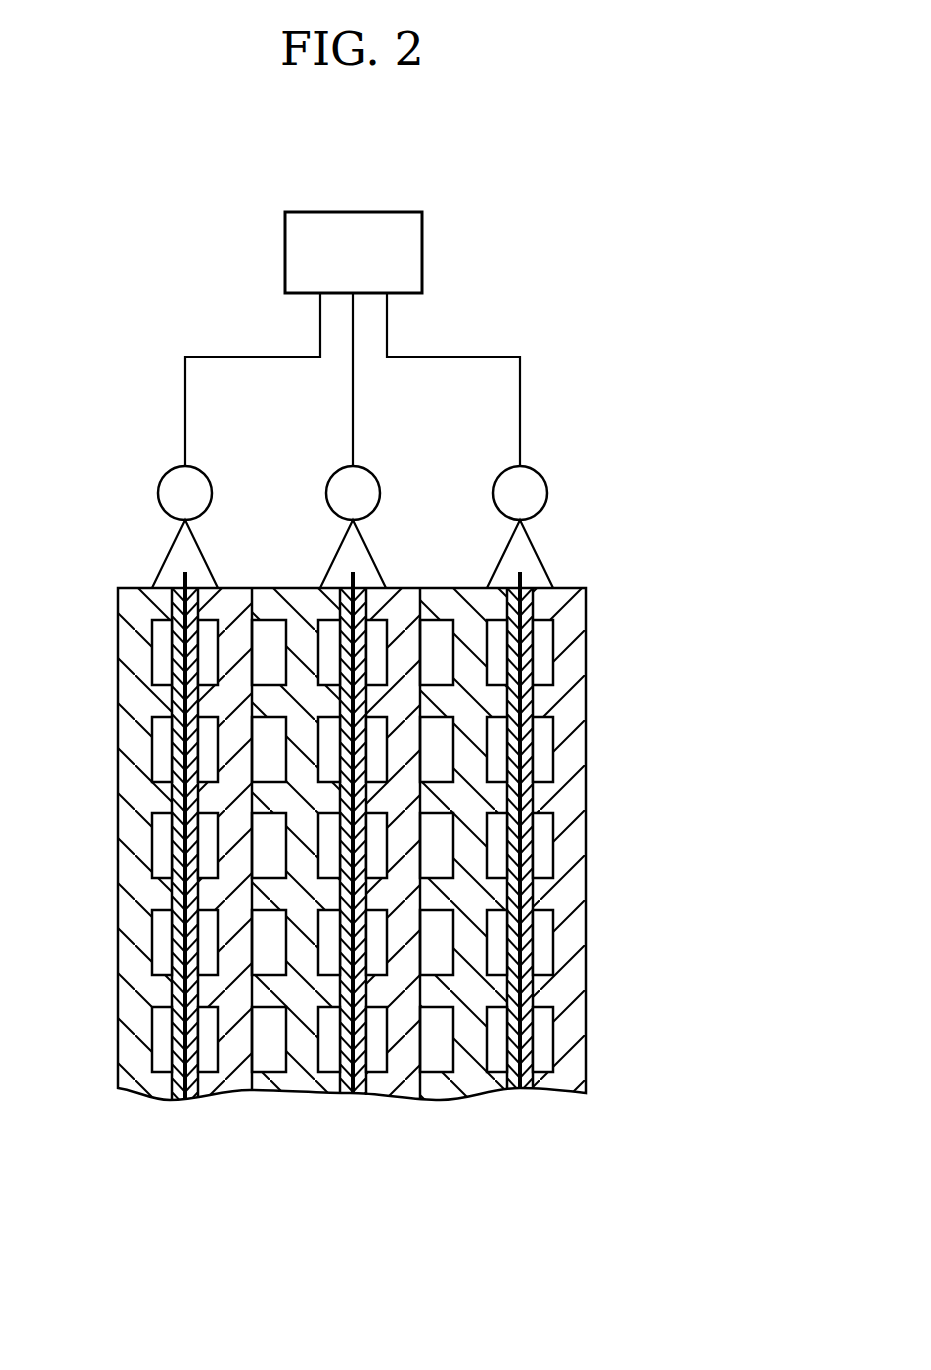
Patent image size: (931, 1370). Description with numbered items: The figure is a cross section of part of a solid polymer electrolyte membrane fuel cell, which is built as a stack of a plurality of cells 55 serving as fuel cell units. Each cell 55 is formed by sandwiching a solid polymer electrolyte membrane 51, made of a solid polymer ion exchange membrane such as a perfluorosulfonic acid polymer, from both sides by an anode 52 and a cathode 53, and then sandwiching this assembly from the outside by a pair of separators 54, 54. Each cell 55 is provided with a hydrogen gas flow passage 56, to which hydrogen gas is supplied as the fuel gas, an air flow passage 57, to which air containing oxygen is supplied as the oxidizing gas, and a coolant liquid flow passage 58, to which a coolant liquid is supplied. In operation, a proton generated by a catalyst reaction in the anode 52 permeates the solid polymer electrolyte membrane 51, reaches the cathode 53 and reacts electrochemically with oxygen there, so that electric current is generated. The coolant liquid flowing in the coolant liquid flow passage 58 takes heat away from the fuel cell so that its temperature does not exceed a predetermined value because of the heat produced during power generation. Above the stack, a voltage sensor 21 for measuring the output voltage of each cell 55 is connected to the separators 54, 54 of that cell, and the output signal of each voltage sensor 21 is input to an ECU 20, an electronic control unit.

The ECU 20 is at (357, 212).
The voltage sensor 21 is at (208, 477).
The solid polymer electrolyte membrane 51 is at (345, 1093).
The anode 52 is at (335, 1043).
The cathode 53 is at (373, 1047).
The separator 54 is at (299, 1078).
The cell 55 is at (478, 1185).
The hydrogen gas flow passage 56 is at (330, 952).
The air flow passage 57 is at (375, 955).
The coolant liquid flow passage 58 is at (263, 932).